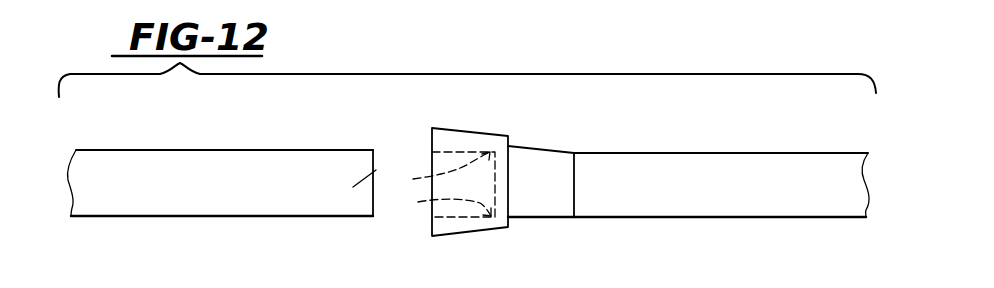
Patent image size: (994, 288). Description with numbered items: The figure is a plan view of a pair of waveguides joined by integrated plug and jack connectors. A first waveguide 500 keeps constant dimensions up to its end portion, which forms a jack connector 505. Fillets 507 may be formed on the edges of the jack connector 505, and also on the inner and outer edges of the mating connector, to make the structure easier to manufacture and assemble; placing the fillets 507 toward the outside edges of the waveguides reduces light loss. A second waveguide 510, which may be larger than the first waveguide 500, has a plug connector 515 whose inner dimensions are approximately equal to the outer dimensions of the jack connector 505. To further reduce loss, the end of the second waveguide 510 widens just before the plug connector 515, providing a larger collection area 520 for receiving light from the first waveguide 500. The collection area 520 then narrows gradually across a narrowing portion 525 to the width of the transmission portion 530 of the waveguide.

The first waveguide 500 is at (110, 200).
The jack connector 505 is at (377, 170).
The fillets 507 is at (373, 150).
The second waveguide 510 is at (800, 205).
The plug connector 515 is at (477, 131).
The collection area 520 is at (512, 144).
The narrowing portion 525 is at (535, 203).
The transmission portion 530 is at (622, 168).